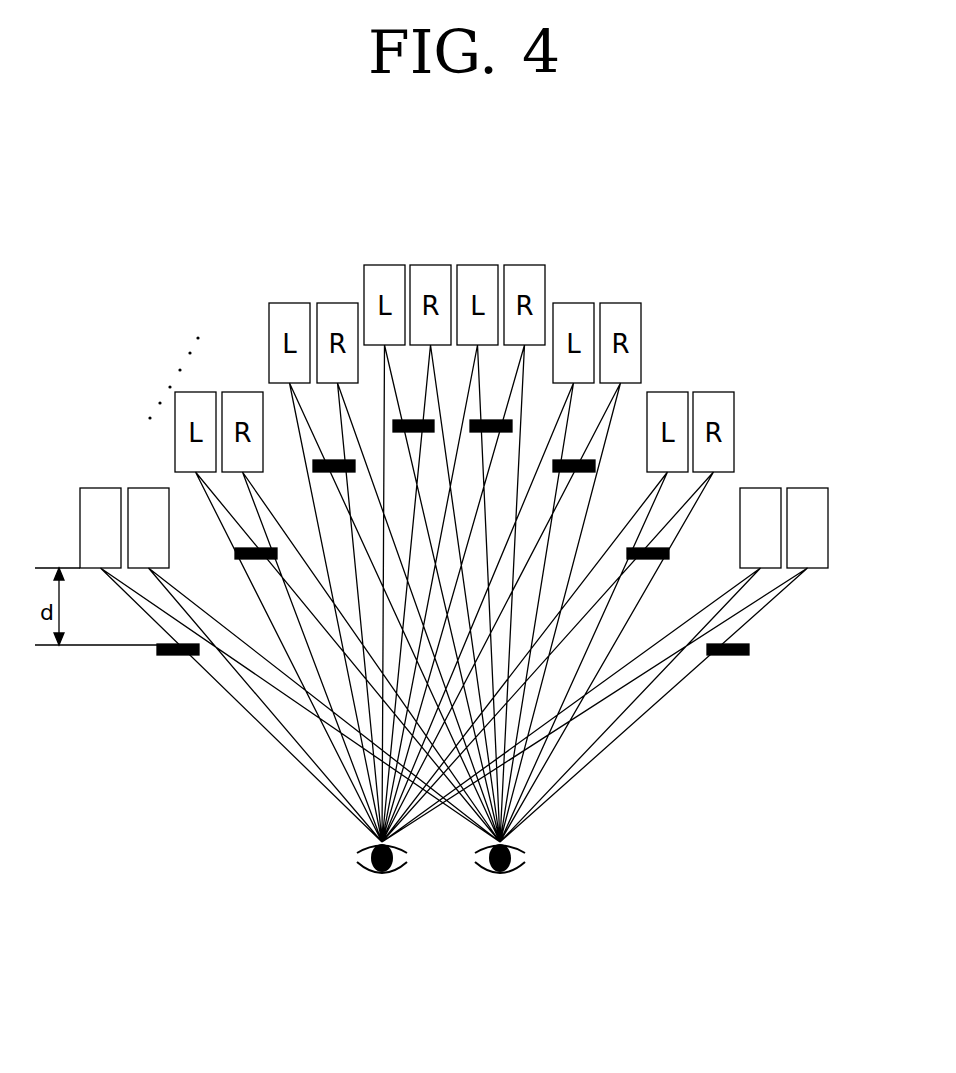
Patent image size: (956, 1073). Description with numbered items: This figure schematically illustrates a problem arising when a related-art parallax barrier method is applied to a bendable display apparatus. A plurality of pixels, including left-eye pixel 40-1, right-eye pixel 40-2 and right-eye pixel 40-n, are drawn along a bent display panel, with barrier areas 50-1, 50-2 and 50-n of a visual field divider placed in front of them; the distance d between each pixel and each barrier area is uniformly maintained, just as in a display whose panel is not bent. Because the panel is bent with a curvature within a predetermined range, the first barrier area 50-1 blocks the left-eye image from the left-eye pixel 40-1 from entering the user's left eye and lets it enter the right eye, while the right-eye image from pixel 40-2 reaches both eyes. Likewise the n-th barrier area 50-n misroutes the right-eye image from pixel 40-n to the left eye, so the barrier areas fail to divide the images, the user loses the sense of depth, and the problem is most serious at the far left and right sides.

The left-eye pixel 40-1 is at (89, 488).
The right-eye pixel 40-2 is at (146, 488).
The right-eye pixel 40-n is at (817, 488).
The first barrier area 50-1 is at (178, 656).
The barrier area 50-2 is at (263, 559).
The n-th barrier area 50-n is at (728, 656).